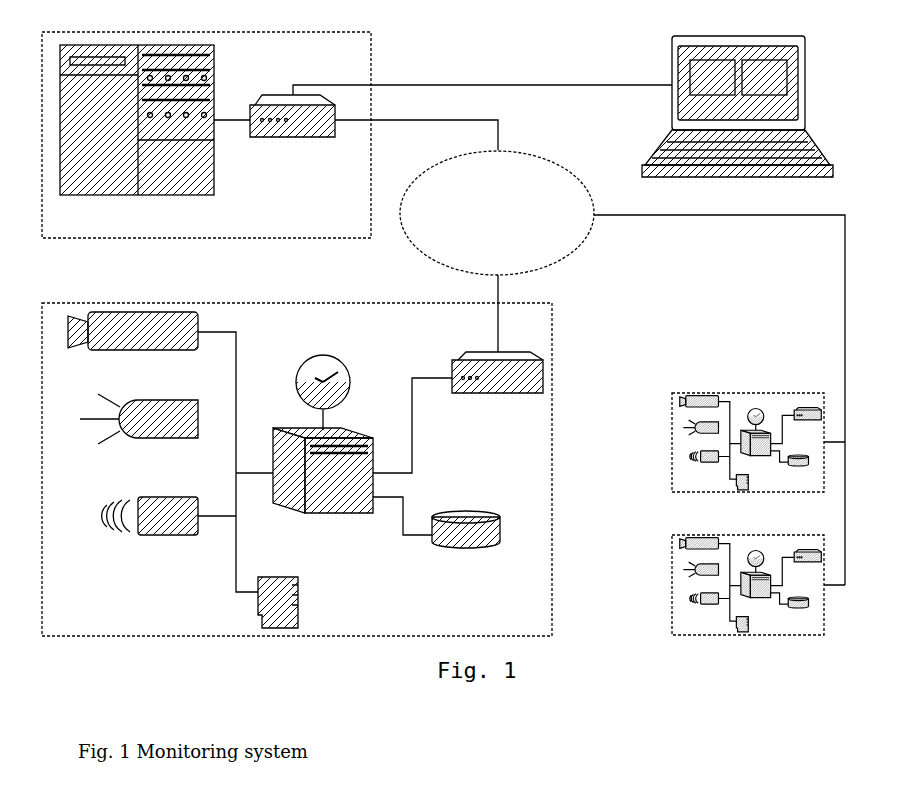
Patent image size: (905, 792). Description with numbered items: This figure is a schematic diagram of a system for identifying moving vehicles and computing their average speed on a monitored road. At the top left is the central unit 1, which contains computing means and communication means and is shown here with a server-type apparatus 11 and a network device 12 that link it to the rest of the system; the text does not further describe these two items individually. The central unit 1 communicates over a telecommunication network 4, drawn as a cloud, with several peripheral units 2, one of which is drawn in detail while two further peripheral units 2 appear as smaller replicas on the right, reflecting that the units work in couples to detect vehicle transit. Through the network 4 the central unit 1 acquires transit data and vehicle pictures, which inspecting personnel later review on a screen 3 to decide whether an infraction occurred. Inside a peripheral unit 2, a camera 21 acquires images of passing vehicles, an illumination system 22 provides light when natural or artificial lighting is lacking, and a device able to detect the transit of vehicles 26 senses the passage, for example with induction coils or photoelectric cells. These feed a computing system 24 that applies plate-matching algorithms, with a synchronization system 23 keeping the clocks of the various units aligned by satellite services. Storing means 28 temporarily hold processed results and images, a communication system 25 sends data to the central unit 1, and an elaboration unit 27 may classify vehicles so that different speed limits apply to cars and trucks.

The central unit 1 is at (206, 124).
The server 11 is at (137, 133).
The router 12 is at (292, 128).
The peripheral unit 2 is at (433, 458).
The camera 21 is at (133, 344).
The illumination system 22 is at (139, 429).
The synchronization system 23 is at (323, 371).
The computing system 24 is at (323, 484).
The communication system 25 is at (497, 383).
The device able to detect the transit of vehicles 26 is at (150, 529).
The elaboration unit 27 is at (290, 602).
The storing means 28 is at (466, 547).
The screen 3 is at (737, 95).
The telecommunication network 4 is at (497, 213).